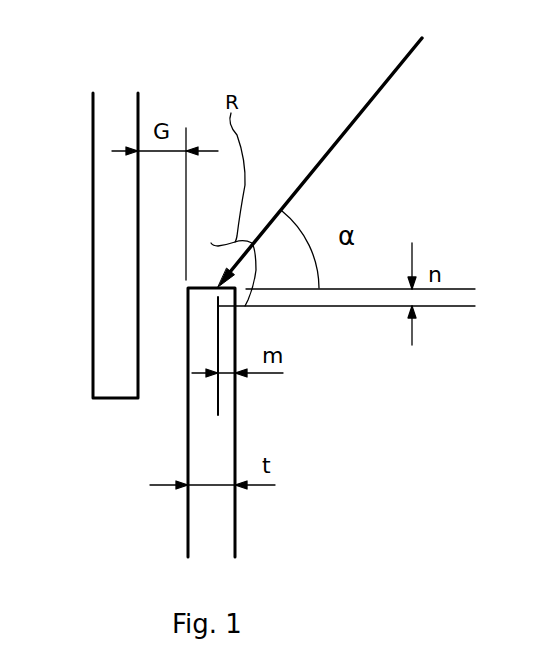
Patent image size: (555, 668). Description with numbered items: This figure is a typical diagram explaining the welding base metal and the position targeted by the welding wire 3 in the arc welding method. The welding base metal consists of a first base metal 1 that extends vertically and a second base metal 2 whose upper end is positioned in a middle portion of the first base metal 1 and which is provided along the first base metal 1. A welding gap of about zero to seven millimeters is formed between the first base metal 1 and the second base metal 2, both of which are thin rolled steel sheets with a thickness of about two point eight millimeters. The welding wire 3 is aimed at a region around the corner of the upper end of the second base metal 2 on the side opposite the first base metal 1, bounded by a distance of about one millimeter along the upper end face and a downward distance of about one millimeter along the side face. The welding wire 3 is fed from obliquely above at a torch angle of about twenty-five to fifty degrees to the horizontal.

The first base metal 1 is at (93, 188).
The second base metal 2 is at (188, 522).
The welding wire 3 is at (318, 157).